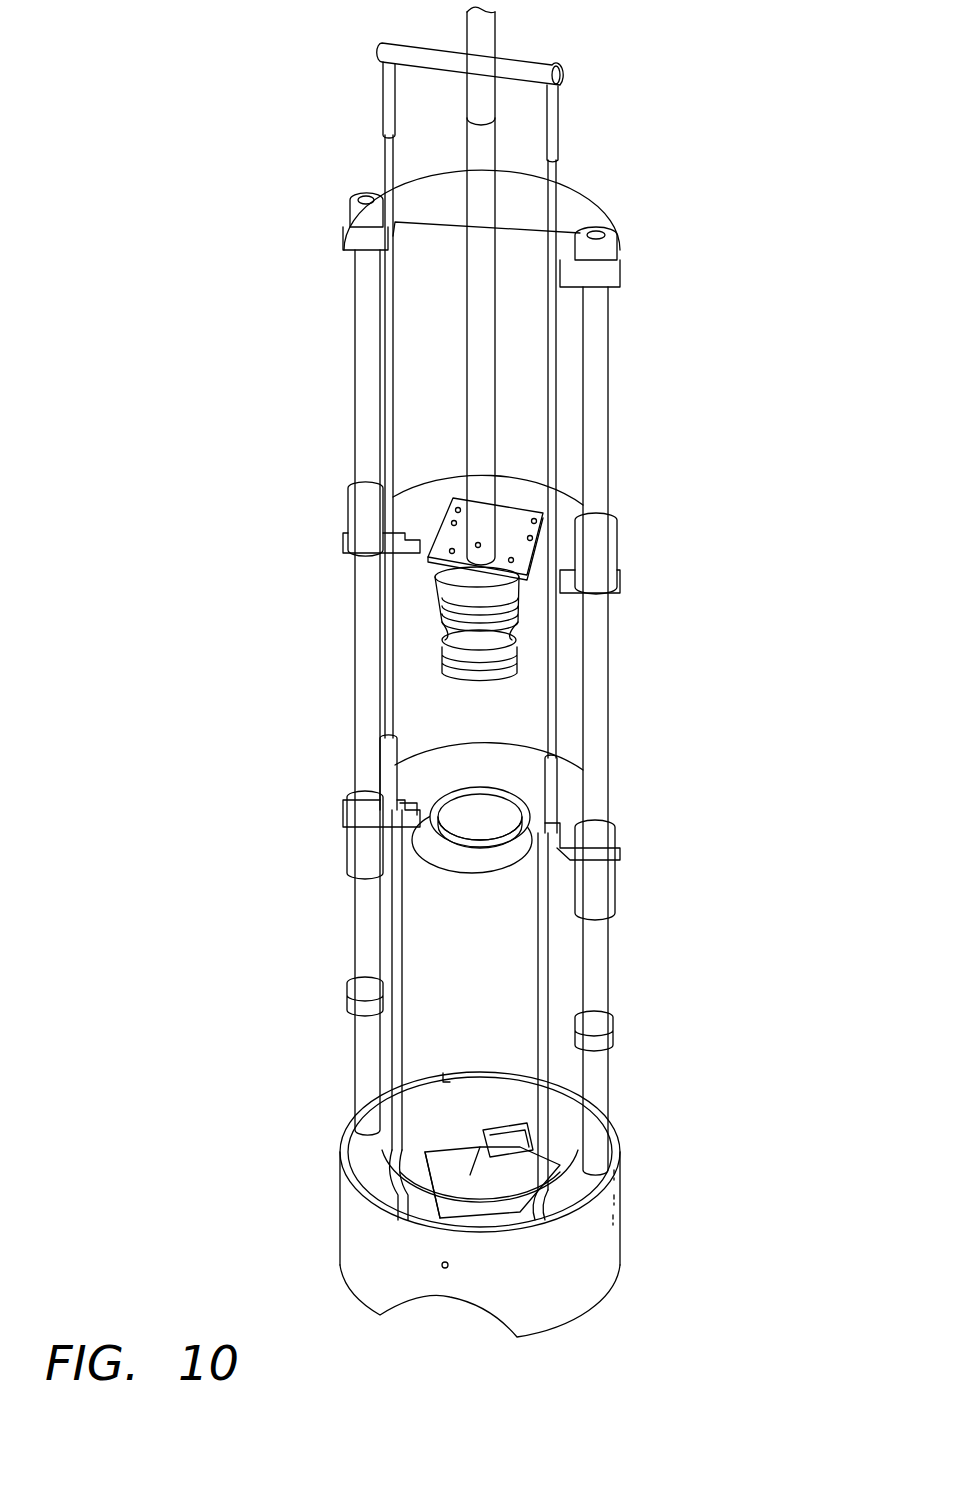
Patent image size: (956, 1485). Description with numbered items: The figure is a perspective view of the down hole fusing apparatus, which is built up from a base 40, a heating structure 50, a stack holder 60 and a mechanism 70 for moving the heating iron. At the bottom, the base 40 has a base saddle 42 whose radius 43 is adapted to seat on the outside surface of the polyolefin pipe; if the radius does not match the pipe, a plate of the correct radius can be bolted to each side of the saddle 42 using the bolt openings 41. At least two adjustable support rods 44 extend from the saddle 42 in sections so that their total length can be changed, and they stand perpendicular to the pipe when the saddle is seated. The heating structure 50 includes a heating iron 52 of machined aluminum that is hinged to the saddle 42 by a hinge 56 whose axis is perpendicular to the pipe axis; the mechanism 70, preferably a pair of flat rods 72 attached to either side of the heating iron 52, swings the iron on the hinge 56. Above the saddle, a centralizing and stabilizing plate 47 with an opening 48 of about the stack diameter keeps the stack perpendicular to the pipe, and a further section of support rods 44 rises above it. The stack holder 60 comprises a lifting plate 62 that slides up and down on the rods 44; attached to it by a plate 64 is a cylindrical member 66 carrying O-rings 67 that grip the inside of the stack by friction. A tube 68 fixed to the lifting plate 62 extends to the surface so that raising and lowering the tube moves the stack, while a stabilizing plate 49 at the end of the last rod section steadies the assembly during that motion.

The base 40 is at (487, 1203).
The bolt openings 41 is at (441, 1265).
The base saddle 42 is at (355, 1220).
The radius 43 is at (468, 1308).
The adjustable support rods 44 is at (358, 712).
The centralizing and stabilizing plate 47 is at (476, 757).
The opening 48 is at (500, 808).
The stabilizing plate 49 is at (437, 185).
The heating structure 50 is at (464, 1168).
The heating iron 52 is at (497, 1210).
The hinge 56 is at (508, 1130).
The stack holder 60 is at (476, 641).
The lifting plate 62 is at (415, 495).
The plate 64 is at (510, 513).
The cylindrical member 66 is at (465, 647).
The O-rings 67 is at (517, 610).
The tube 68 is at (473, 392).
The mechanism 70 is at (562, 116).
The flat rods 72 is at (390, 315).